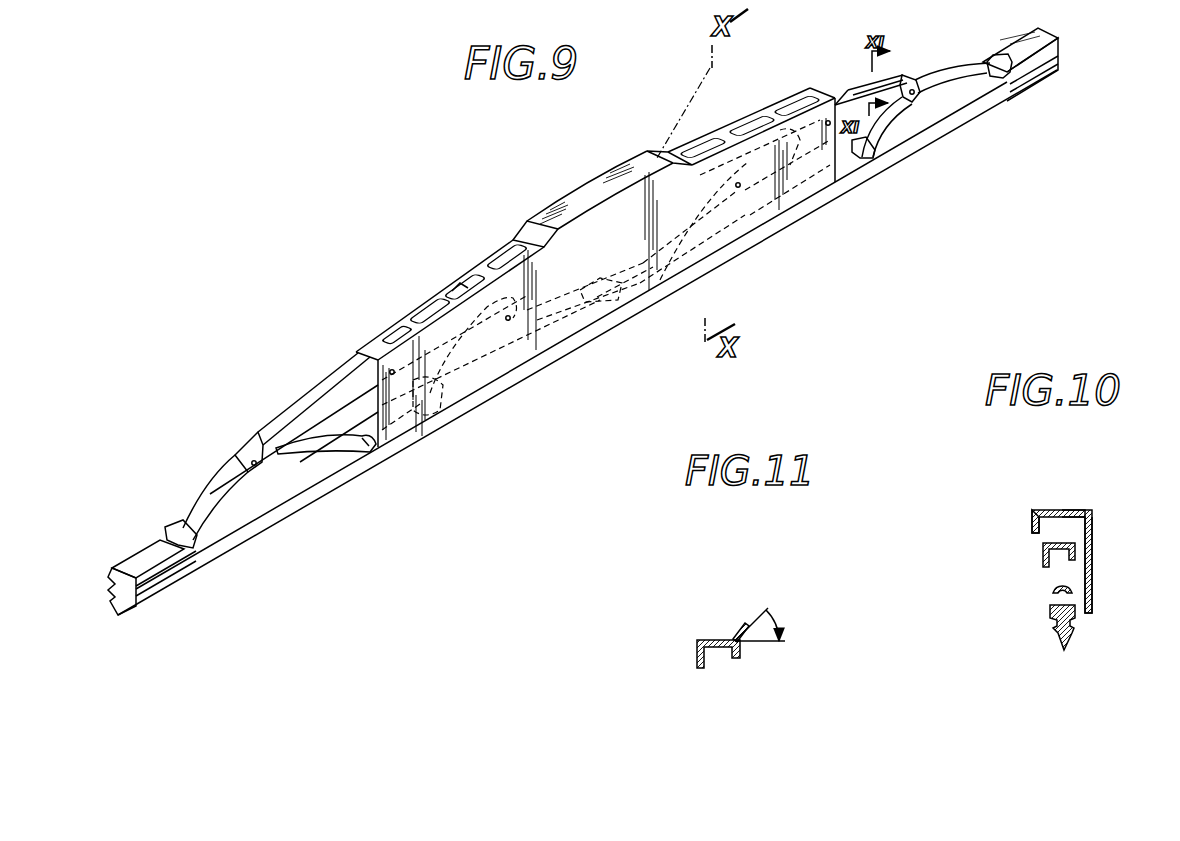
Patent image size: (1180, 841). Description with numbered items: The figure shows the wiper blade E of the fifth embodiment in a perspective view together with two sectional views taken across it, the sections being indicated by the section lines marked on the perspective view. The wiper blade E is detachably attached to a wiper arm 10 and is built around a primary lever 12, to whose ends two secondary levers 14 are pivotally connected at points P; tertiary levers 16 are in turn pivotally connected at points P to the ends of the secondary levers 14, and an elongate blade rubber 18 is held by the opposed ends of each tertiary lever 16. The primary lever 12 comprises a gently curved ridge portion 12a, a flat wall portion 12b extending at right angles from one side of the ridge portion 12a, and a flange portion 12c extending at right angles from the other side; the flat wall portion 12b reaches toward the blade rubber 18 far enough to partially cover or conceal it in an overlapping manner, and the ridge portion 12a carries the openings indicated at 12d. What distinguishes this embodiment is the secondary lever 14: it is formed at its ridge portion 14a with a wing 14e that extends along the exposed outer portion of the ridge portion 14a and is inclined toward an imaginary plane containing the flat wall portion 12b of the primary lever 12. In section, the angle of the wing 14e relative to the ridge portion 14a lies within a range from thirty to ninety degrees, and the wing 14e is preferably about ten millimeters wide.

In FIG. 9, the wiper arm 10 is at (782, 100).
In FIG. 9, the primary lever 12 is at (593, 174).
In FIG. 10, the primary lever 12 is at (1093, 513).
In FIG. 9, the ridge portion 12a is at (486, 264).
In FIG. 10, the ridge portion 12a is at (1040, 510).
In FIG. 9, the flat wall portion 12b is at (608, 243).
In FIG. 10, the flat wall portion 12b is at (1091, 566).
In FIG. 9, the flange portion 12c is at (359, 351).
In FIG. 9, the tongue in slot of top wall 12d is at (452, 284).
In FIG. 10, the tongue in slot of top wall 12d is at (1072, 511).
In FIG. 9, the secondary lever 14 is at (336, 402).
In FIG. 10, the secondary lever 14 is at (1045, 546).
In FIG. 9, the ridge portion 14a is at (249, 440).
In FIG. 11, the ridge portion 14a is at (717, 638).
In FIG. 9, the wing 14e is at (324, 396).
In FIG. 11, the wing 14e is at (745, 625).
In FIG. 9, the tertiary lever 16 is at (203, 495).
In FIG. 10, the tertiary lever 16 is at (1053, 589).
In FIG. 9, the blade rubber 18 is at (612, 325).
In FIG. 10, the blade rubber 18 is at (1058, 636).
In FIG. 9, the pivot connection P is at (250, 460).
In FIG. 9, the wiper blade E is at (413, 162).
In FIG. 10, the wiper blade E is at (1003, 507).
In FIG. 11, the wiper blade E is at (682, 582).